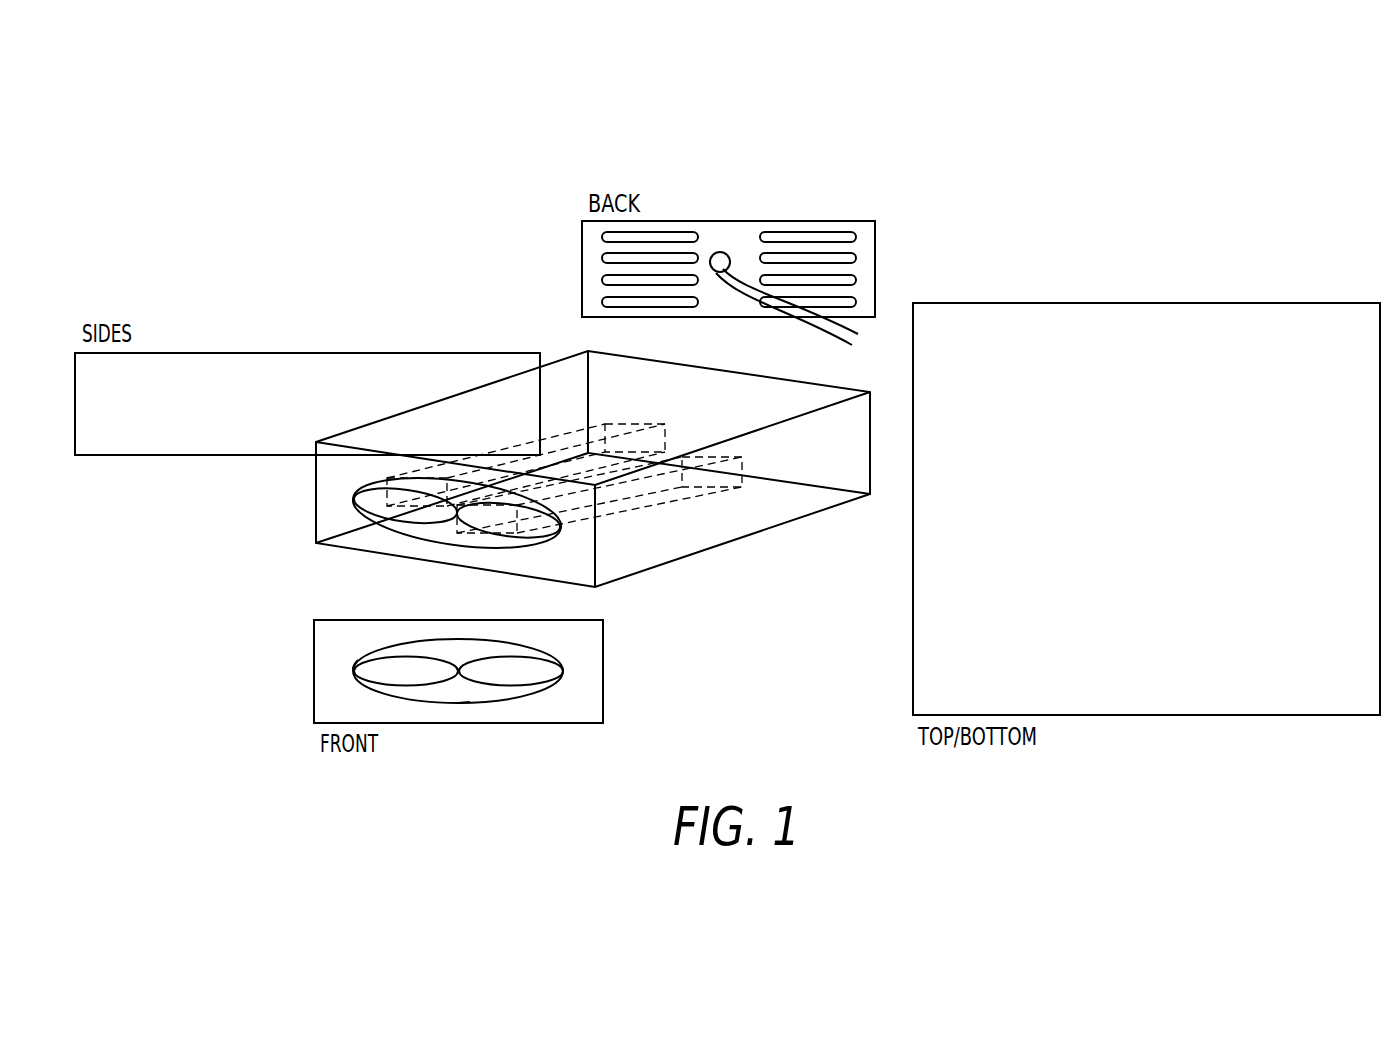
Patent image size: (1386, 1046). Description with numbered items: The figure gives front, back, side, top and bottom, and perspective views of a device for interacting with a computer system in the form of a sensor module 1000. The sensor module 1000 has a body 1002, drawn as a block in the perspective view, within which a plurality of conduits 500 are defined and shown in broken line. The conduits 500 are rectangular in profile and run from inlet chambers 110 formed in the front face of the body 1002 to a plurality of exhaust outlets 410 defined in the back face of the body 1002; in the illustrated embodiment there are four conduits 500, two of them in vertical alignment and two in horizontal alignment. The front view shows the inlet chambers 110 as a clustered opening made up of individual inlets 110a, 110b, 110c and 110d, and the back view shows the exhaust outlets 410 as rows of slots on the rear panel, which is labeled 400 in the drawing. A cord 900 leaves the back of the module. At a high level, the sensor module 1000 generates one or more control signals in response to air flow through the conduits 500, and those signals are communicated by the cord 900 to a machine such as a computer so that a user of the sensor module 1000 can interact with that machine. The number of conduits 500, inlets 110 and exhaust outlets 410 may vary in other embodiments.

The sensor module 1000 is at (1249, 100).
The body 1002 is at (512, 390).
The back panel 400 is at (727, 218).
The exhaust outlets 410 is at (812, 237).
The cord 900 is at (828, 321).
The conduits 500 is at (457, 450).
The inlet chambers 110 is at (369, 501).
The upper lobe of light pattern 110a is at (450, 646).
The right lobe of light pattern 110b is at (555, 667).
The lower lobe of light pattern 110c is at (480, 692).
The left lobe of light pattern 110d is at (365, 672).